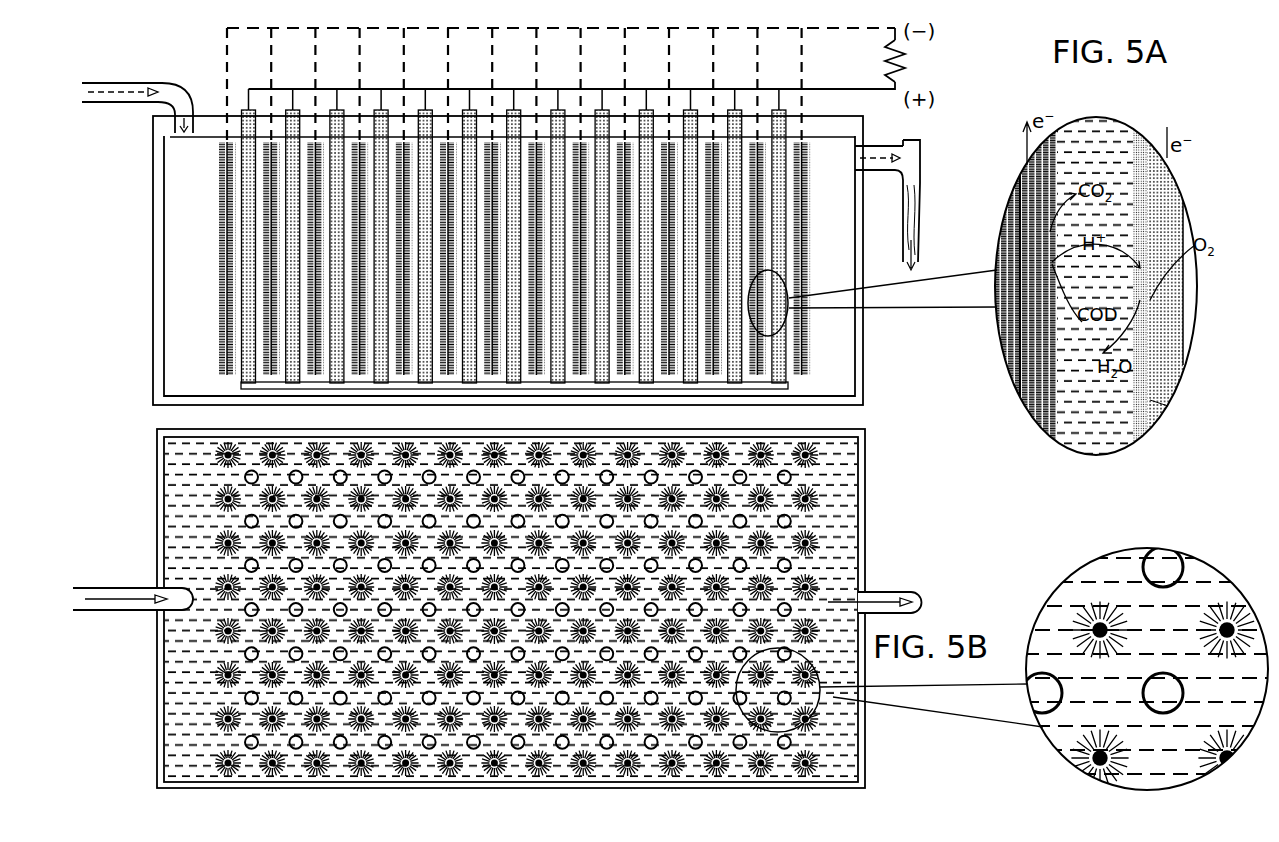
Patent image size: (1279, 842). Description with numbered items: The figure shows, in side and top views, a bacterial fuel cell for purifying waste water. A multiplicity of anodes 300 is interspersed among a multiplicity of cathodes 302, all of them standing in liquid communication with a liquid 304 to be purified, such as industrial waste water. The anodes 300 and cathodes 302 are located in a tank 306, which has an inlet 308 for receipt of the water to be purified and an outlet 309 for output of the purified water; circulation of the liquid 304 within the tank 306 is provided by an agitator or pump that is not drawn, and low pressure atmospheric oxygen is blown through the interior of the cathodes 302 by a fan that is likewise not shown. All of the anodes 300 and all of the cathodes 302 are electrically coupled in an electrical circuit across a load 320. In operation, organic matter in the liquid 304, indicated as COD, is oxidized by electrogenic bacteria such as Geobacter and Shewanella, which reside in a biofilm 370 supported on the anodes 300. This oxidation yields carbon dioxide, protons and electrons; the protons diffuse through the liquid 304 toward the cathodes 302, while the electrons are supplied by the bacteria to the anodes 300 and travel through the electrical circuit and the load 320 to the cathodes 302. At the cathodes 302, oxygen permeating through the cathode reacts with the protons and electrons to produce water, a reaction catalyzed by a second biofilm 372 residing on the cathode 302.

In FIG. 5A, the anodes 300 is at (407, 143).
In FIG. 5B, the anodes 300 is at (1100, 754).
In FIG. 5A, the cathodes 302 is at (332, 115).
In FIG. 5B, the cathodes 302 is at (1183, 680).
In FIG. 5A, the liquid 304 is at (833, 336).
In FIG. 5B, the liquid 304 is at (828, 545).
In FIG. 5A, the tank 306 is at (858, 378).
In FIG. 5B, the tank 306 is at (866, 487).
In FIG. 5A, the inlet 308 is at (110, 99).
In FIG. 5B, the inlet 308 is at (110, 606).
In FIG. 5A, the outlet 309 is at (921, 151).
In FIG. 5B, the outlet 309 is at (925, 604).
In FIG. 5A, the load 320 is at (908, 60).
In FIG. 5A, the biofilm 370 is at (1040, 148).
In FIG. 5A, the biofilm 372 is at (1165, 407).